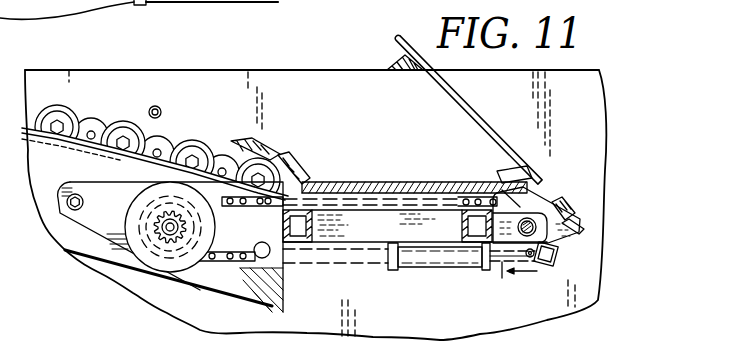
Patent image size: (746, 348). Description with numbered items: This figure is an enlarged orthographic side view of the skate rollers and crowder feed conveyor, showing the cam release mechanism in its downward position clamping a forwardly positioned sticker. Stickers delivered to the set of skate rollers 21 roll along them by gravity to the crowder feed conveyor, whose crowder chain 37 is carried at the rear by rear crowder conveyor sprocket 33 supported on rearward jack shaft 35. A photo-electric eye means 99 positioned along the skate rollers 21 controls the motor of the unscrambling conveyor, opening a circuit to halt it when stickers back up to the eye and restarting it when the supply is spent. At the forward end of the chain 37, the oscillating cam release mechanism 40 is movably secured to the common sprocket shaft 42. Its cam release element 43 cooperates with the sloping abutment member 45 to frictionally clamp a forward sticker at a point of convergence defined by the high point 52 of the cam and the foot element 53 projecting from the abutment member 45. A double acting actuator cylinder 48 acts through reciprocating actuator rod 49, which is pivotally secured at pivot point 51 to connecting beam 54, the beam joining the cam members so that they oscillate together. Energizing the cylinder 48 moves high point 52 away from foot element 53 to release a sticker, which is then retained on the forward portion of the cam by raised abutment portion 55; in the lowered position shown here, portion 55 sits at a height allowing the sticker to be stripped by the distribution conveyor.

The skate rollers 21 is at (137, 122).
The photo-electric eye means 99 is at (160, 108).
The rear crowder conveyor sprocket 33 is at (167, 240).
The rearward jack shaft 35 is at (162, 223).
The crowder chain 37 is at (223, 262).
The oscillating cam release mechanism 40 is at (543, 198).
The sprocket shaft 42 is at (536, 230).
The cam release element 43 is at (561, 248).
The abutment member 45 is at (470, 107).
The double acting actuator cylinder 48 is at (463, 256).
The actuator rod 49 is at (513, 283).
The pivot point 51 is at (531, 256).
The high point 52 is at (499, 177).
The foot element 53 is at (503, 168).
The connecting beam 54 is at (547, 267).
The raised abutment portion 55 is at (577, 216).